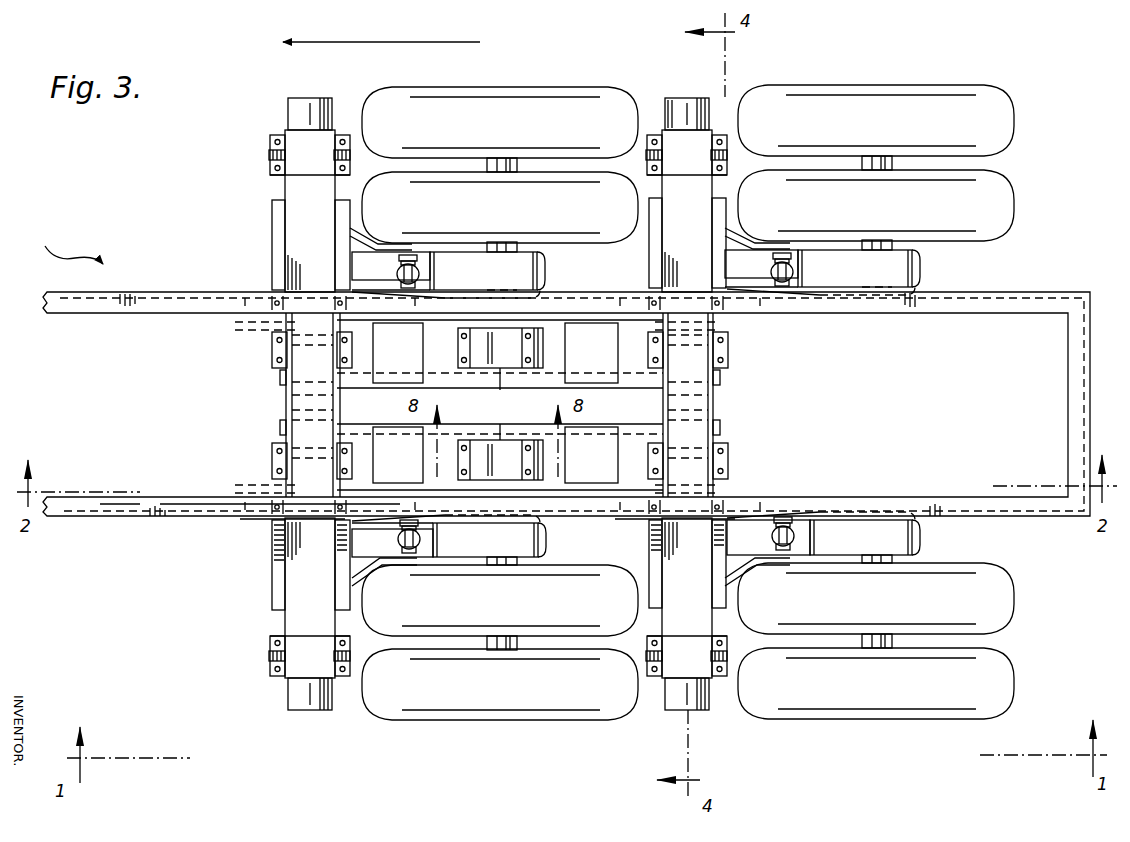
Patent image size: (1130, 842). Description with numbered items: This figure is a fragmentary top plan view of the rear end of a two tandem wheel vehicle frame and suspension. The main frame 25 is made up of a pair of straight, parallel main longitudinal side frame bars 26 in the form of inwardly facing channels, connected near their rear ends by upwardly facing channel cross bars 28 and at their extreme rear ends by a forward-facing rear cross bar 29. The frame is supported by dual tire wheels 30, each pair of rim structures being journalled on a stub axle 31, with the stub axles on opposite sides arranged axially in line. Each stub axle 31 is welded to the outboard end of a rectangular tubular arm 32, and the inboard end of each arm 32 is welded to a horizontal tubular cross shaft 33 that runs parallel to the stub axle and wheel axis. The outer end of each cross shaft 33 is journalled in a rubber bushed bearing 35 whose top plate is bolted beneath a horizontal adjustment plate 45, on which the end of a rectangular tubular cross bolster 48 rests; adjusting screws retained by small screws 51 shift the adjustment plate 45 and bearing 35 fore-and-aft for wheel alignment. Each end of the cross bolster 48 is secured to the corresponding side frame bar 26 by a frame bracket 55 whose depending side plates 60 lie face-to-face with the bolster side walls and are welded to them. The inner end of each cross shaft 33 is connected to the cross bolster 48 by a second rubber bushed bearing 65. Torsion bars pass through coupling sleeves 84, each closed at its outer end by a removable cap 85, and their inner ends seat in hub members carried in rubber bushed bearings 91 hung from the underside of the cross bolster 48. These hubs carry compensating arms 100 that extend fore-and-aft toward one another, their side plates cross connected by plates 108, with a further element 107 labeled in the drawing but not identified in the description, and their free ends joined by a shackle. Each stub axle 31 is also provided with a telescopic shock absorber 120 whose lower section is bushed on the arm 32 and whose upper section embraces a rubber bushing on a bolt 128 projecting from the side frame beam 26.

The main frame 25 is at (56, 247).
The main longitudinal side frame bar 26 is at (166, 497).
The cross bar 28 is at (286, 410).
The rear cross bar 29 is at (1068, 375).
The dual tire wheel 30 is at (497, 90).
The stub axle 31 is at (485, 163).
The arm 32 is at (470, 262).
The tubular cross shaft 33 is at (537, 262).
The bearing 35 is at (262, 176).
The adjustment plate 45 is at (268, 137).
The cross bolster 48 is at (312, 190).
The small screw 51 is at (268, 155).
The frame bracket 55 is at (268, 536).
The depending side plate 60 is at (345, 243).
The bearing 65 is at (262, 306).
The coupling sleeve 84 is at (312, 108).
The removable cap or disk 85 is at (668, 98).
The bearing 91 is at (268, 350).
The compensating arm 100 is at (538, 388).
The bearing bracket 107 is at (548, 351).
The plate 108 is at (385, 435).
The shock absorber 120 is at (390, 275).
The bolt 128 is at (408, 255).